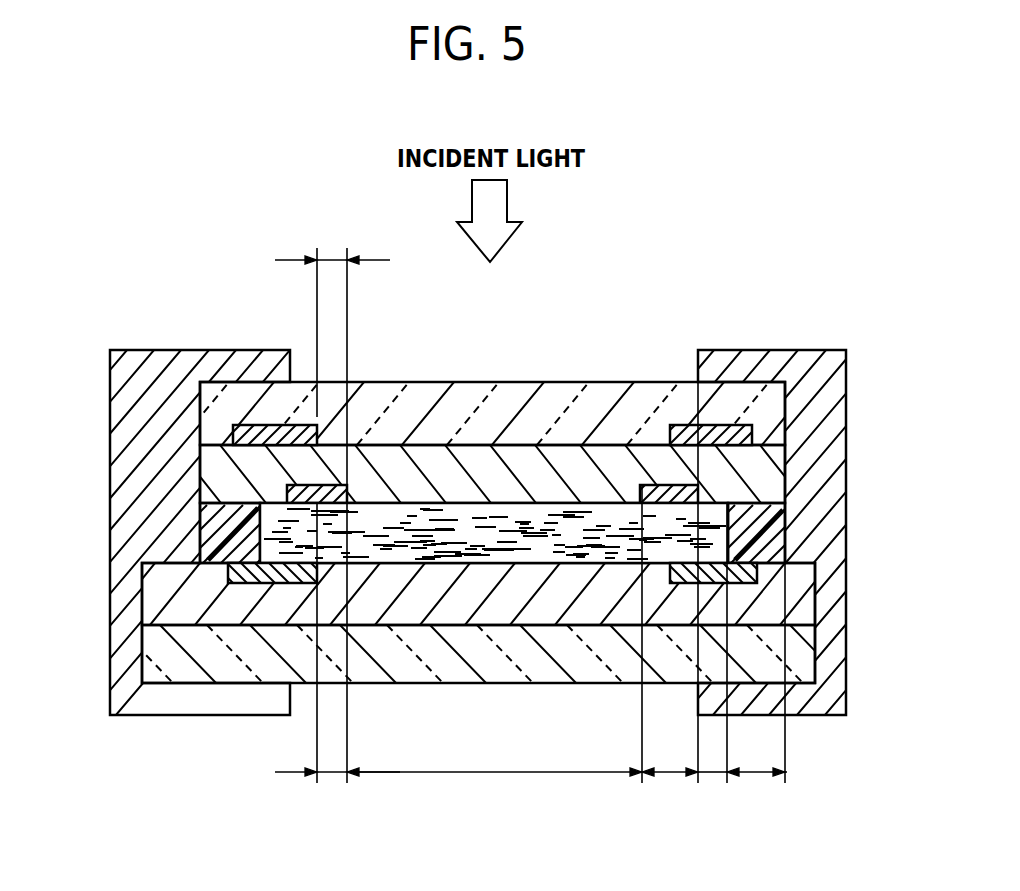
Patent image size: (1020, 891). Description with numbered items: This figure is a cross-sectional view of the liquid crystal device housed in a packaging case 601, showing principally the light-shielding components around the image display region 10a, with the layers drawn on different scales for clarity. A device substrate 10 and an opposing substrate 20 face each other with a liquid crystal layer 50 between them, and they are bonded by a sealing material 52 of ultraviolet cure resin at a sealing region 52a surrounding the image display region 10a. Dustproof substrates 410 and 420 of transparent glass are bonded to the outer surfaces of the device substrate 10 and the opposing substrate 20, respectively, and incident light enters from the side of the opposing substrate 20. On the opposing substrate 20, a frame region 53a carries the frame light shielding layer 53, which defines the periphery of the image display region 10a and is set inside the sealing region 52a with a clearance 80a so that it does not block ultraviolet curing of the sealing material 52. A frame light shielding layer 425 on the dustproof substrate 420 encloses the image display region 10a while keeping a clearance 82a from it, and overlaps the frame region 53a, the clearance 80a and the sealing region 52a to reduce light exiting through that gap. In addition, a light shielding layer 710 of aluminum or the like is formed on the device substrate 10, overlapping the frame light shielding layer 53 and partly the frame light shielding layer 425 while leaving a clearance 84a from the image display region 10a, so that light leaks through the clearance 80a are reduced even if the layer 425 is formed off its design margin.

The packaging case 601 is at (157, 350).
The dustproof substrate 420 is at (212, 402).
The opposing substrate 20 is at (213, 457).
The frame light shielding layer 53 is at (292, 484).
The sealing material 52 is at (228, 538).
The device substrate 10 is at (160, 583).
The dustproof substrate 410 is at (160, 645).
The frame light shielding layer 425 is at (306, 428).
The liquid crystal layer 50 is at (497, 525).
The light shielding layer 710 is at (252, 580).
The clearance 82a is at (330, 258).
The clearance 84a is at (332, 775).
The image display region 10a is at (489, 775).
The frame region 53a is at (668, 775).
The clearance 80a is at (713, 775).
The sealing region 52a is at (758, 775).